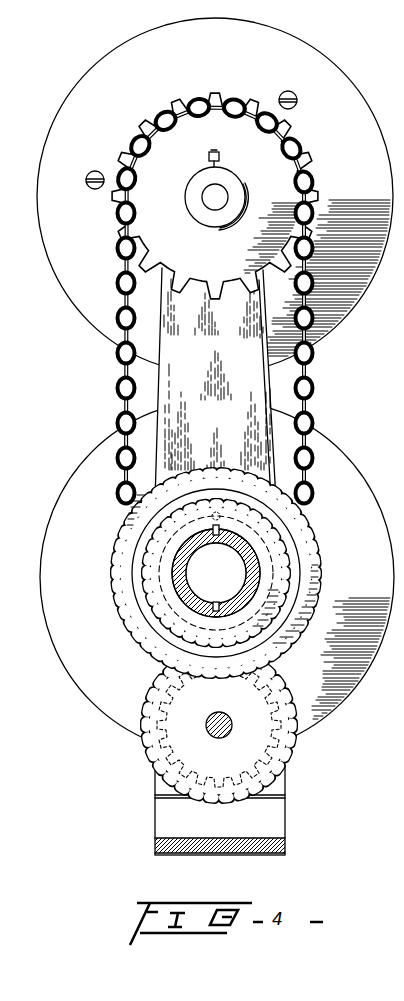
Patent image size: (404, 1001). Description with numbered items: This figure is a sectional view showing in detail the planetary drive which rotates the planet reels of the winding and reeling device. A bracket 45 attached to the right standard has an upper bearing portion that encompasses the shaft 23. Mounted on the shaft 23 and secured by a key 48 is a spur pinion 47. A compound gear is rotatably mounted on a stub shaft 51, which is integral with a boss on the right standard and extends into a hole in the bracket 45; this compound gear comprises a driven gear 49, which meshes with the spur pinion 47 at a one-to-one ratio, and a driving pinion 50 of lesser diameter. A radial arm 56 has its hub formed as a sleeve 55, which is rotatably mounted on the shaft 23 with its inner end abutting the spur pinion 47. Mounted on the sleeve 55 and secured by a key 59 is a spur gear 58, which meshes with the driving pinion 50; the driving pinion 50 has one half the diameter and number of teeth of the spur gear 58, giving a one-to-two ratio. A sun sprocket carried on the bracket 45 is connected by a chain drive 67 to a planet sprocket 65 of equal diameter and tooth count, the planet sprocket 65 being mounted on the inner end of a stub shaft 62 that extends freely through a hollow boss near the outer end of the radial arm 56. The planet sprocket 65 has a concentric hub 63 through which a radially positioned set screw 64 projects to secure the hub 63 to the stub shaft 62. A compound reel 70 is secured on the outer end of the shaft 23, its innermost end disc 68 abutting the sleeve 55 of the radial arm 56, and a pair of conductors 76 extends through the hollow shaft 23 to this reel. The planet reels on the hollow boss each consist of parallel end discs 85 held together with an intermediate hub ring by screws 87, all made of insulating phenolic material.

The end discs 85 is at (290, 52).
The screws 87 is at (298, 97).
The stub shaft 62 is at (225, 190).
The hub 63 is at (195, 182).
The set screw 64 is at (212, 150).
The planet sprocket 65 is at (217, 306).
The chain drive 67 is at (118, 370).
The radial arm 56 is at (257, 387).
The innermost end disc 68 is at (72, 482).
The spur gear 58 is at (121, 541).
The spur pinion 47 is at (293, 557).
The sleeve 55 is at (172, 610).
The key 48 is at (231, 545).
The shaft 23 is at (191, 597).
The key 59 is at (213, 537).
The conductors 76 is at (217, 611).
The compound reel 70 is at (104, 727).
The driven gear 49 is at (153, 762).
The driving pinion 50 is at (293, 752).
The stub shaft 51 is at (223, 727).
The bracket 45 is at (223, 828).